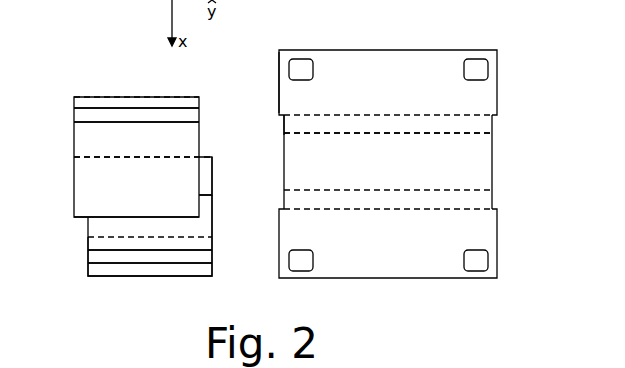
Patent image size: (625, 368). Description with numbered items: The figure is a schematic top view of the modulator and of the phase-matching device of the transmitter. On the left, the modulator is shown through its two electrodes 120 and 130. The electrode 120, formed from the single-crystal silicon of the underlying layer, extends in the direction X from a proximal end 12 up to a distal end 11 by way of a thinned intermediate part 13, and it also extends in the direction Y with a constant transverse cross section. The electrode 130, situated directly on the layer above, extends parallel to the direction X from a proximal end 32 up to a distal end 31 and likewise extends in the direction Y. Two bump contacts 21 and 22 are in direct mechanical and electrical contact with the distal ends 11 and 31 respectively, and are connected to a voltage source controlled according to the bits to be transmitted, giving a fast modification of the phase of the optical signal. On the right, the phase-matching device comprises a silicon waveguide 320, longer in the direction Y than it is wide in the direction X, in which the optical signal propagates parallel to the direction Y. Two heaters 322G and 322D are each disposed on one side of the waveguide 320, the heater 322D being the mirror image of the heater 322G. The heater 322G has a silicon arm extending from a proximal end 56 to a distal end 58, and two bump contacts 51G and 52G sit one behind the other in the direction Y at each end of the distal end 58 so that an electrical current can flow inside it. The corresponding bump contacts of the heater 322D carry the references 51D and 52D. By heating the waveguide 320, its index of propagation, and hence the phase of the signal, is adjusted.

The electrode 130 is at (87, 88).
The bump contact 22 is at (105, 115).
The distal end 31 is at (72, 97).
The proximal end 32 is at (72, 157).
The proximal end 12 is at (213, 157).
The thinned intermediate part 13 is at (213, 195).
The distal end 11 is at (213, 237).
The electrode 120 is at (78, 243).
The bump contact 21 is at (105, 258).
The bump contact 51G is at (301, 59).
The bump contact 52G is at (478, 59).
The distal end 58 is at (278, 52).
The proximal end 56 is at (280, 115).
The heater 322G is at (504, 48).
The waveguide 320 is at (504, 207).
The heater 322D is at (504, 278).
The bump contact 51D is at (303, 271).
The bump contact 52D is at (477, 271).